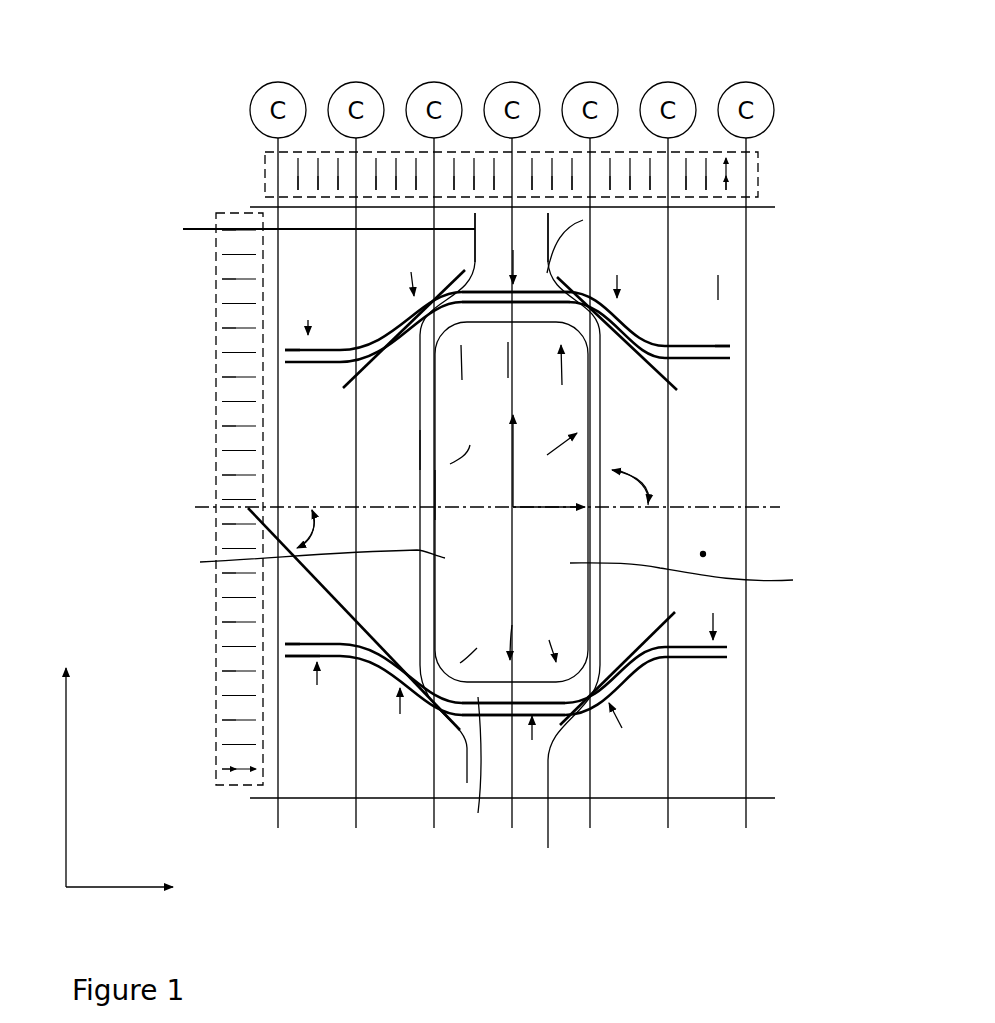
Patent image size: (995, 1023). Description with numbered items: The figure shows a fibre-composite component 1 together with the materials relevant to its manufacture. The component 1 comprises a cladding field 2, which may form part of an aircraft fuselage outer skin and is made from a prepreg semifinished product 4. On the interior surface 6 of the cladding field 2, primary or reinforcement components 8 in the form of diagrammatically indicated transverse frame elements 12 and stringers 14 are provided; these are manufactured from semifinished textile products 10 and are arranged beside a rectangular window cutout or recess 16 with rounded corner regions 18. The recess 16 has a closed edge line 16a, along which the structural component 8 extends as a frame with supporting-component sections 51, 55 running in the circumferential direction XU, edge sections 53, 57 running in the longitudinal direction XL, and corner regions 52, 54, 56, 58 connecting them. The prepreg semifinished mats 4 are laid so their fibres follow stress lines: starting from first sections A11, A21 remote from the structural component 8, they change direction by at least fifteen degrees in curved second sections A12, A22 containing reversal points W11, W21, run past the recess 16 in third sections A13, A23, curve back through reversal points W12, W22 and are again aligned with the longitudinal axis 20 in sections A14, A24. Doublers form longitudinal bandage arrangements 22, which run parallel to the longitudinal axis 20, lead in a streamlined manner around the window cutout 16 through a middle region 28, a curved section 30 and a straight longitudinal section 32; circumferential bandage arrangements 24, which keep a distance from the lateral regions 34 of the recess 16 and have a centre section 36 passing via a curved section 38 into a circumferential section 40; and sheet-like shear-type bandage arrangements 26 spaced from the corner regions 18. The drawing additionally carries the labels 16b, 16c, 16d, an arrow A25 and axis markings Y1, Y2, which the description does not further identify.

The fibre-composite component 1 is at (206, 108).
The cladding field 2 is at (760, 391).
The prepreg semifinished mats 4 is at (723, 462).
The interior surface 6 is at (704, 554).
The structural component 8 is at (603, 395).
The semifinished textile products 10 is at (300, 251).
The transverse frame elements 12 is at (520, 198).
The stringers 14 is at (399, 207).
The recess 16 is at (441, 609).
The edge line 16a is at (549, 494).
The flow direction 16b is at (507, 504).
The flow direction 16c is at (512, 501).
The flow direction 16d is at (513, 449).
The rounded corner regions 18 is at (727, 657).
The longitudinal axis 20 is at (708, 507).
The longitudinal bandage arrangements 22 is at (503, 290).
The circumferential bandage arrangements 24 is at (483, 580).
The shear-type bandage arrangements 26 is at (343, 366).
The middle region 28 is at (484, 283).
The curved section 30 is at (327, 730).
The straight longitudinal section 32 is at (273, 658).
The lateral regions 34 is at (437, 500).
The centre section 36 is at (417, 450).
The curved section 38 is at (625, 326).
The circumferential section 40 is at (308, 231).
The supporting-component section 51 is at (427, 525).
The corner region 52 is at (413, 650).
The edge section 53 is at (469, 767).
The corner region 54 is at (610, 685).
The supporting-component section 55 is at (603, 523).
The corner region 56 is at (570, 275).
The edge section 57 is at (580, 242).
The corner region 58 is at (430, 312).
The first section A11 is at (299, 686).
The second section A12 is at (399, 714).
The third section A13 is at (517, 740).
The subsequent section A14 is at (621, 729).
The first section A21 is at (299, 310).
The second section A22 is at (399, 269).
The third section A23 is at (526, 247).
The subsequent section A24 is at (627, 271).
The flow arrow A25 is at (714, 442).
The reversal point W11 is at (393, 677).
The reversal point W12 is at (620, 670).
The reversal point W21 is at (413, 307).
The reversal point W22 is at (617, 320).
The axis Y1 is at (518, 510).
The axis Y2 is at (513, 442).
The circumferential direction XU is at (86, 777).
The longitudinal direction XL is at (119, 910).